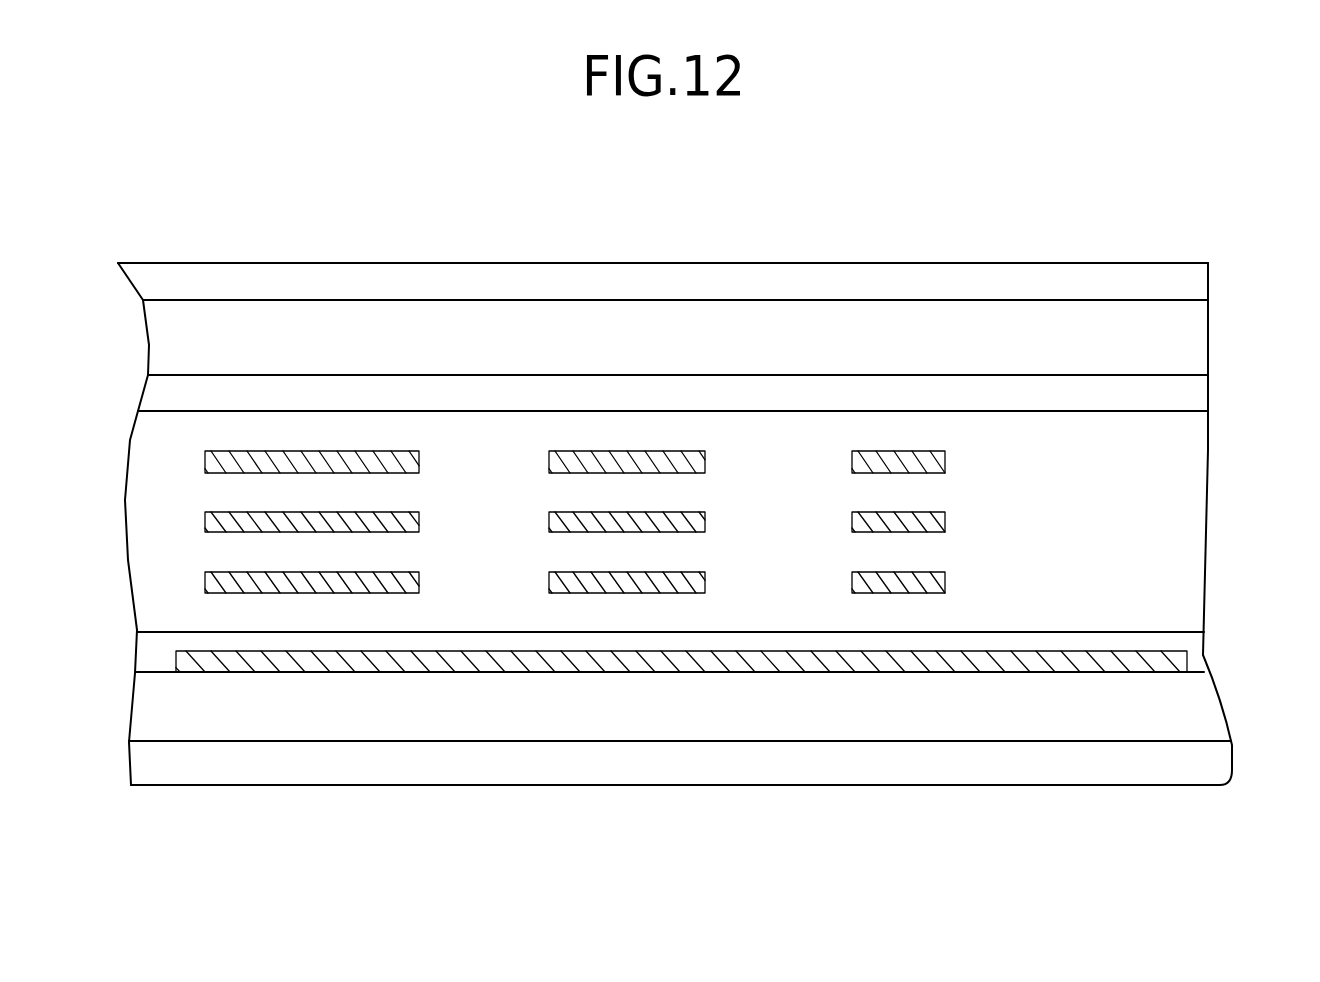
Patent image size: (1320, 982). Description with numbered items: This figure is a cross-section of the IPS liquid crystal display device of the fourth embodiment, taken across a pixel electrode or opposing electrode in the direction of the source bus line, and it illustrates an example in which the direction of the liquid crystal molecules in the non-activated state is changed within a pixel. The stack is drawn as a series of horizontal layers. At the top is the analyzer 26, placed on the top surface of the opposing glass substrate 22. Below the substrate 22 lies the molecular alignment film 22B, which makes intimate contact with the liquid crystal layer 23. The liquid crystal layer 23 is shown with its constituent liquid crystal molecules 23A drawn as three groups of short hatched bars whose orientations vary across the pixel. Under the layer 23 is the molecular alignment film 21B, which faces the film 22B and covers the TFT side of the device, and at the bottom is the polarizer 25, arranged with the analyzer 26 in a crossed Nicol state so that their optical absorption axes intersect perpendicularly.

The analyzer 26 is at (1190, 283).
The glass substrate 22 is at (1190, 354).
The molecular alignment film 22B is at (1190, 432).
The liquid crystal layer 23 is at (1237, 457).
The liquid crystal molecules 23A is at (968, 444).
The molecular alignment film 21B is at (1197, 655).
The polarizer 25 is at (1095, 763).